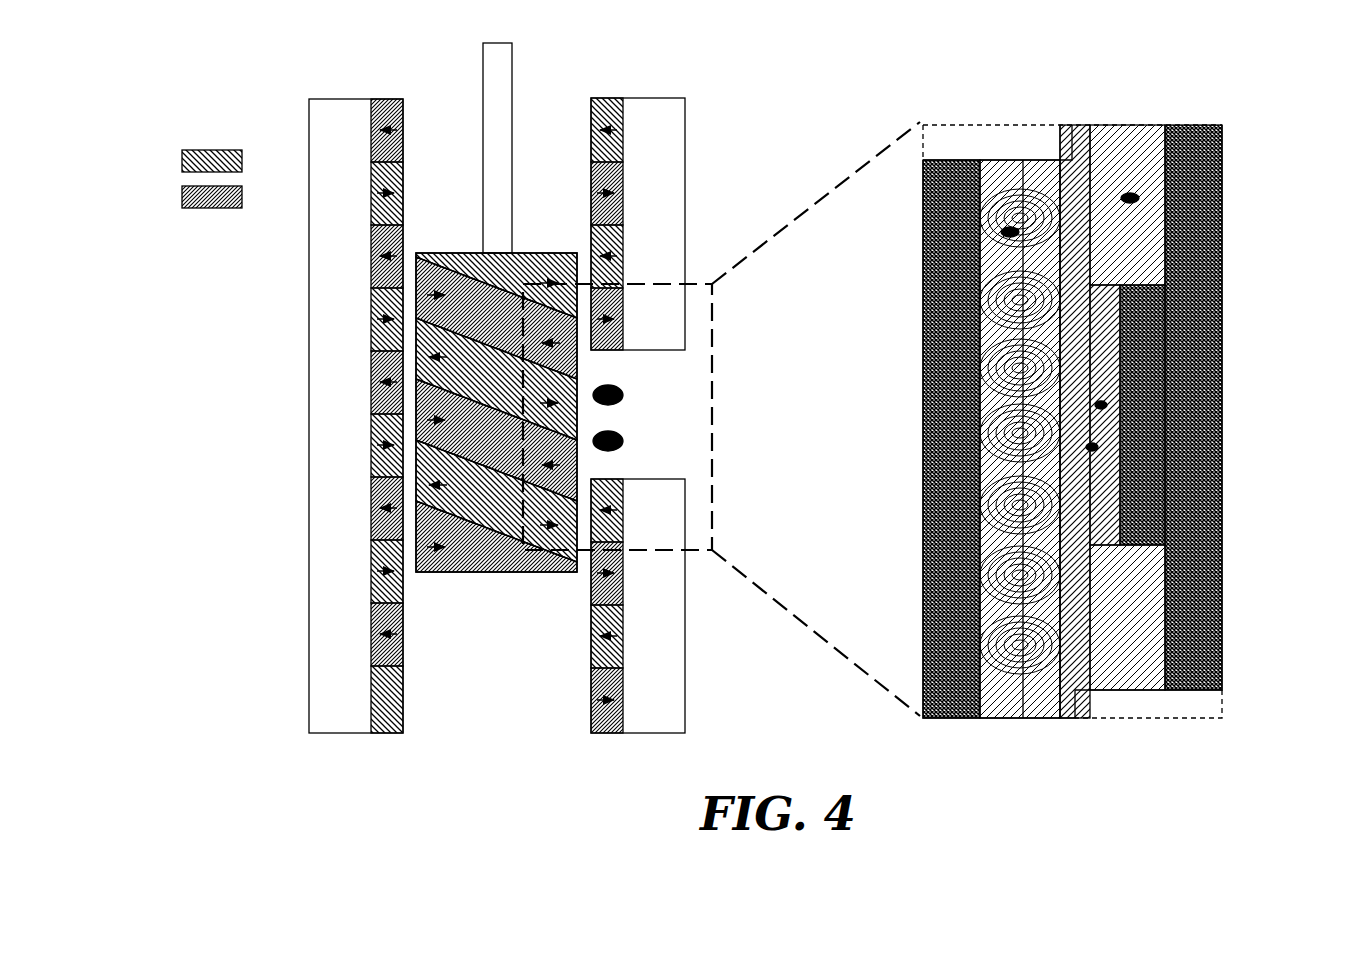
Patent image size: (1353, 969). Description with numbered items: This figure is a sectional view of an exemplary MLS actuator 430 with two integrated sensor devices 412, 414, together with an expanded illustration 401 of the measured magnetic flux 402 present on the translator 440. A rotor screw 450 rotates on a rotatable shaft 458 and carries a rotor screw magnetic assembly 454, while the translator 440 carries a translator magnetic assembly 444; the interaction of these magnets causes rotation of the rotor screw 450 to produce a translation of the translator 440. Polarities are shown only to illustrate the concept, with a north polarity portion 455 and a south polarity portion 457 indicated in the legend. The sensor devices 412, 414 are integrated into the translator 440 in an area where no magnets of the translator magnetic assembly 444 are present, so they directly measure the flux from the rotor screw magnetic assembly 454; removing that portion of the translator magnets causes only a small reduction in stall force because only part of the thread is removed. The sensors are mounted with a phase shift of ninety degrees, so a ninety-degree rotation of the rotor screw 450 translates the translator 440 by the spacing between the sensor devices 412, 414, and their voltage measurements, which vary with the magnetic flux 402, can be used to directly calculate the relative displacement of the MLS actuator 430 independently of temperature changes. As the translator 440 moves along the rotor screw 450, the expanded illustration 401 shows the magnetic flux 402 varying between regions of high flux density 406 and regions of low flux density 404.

The expanded illustration 401 is at (938, 383).
The magnetic flux 402 is at (1148, 194).
The region of low flux density 404 is at (1226, 346).
The region of high flux density 406 is at (1014, 236).
The sensor device 412 is at (1096, 404).
The sensor device 414 is at (1086, 447).
The MLS actuator 430 is at (283, 386).
The translator 440 is at (1188, 569).
The translator magnetic assembly 444 is at (368, 448).
The rotor screw 450 is at (606, 416).
The rotor screw magnetic assembly 454 is at (414, 488).
The north polarity portion 455 is at (242, 162).
The south polarity portion 457 is at (242, 198).
The rotatable shaft 458 is at (516, 112).